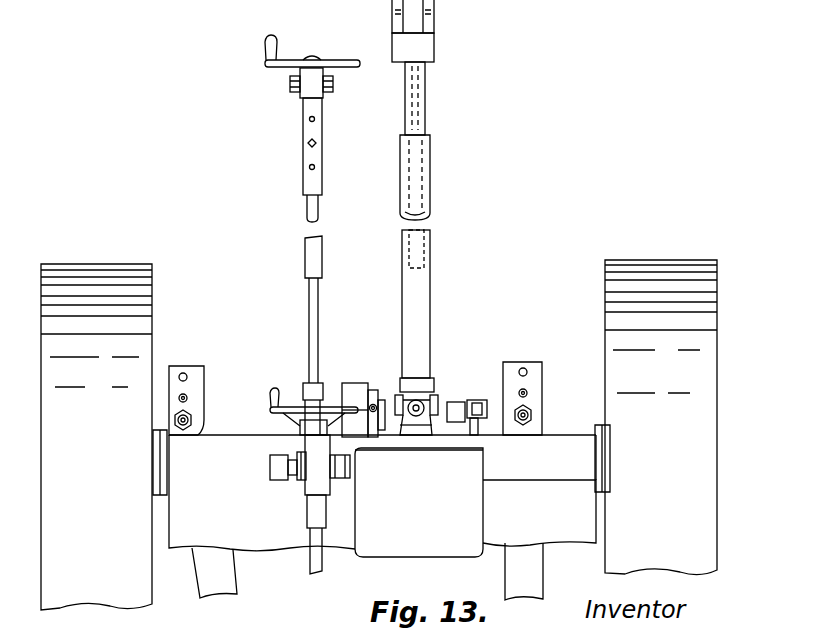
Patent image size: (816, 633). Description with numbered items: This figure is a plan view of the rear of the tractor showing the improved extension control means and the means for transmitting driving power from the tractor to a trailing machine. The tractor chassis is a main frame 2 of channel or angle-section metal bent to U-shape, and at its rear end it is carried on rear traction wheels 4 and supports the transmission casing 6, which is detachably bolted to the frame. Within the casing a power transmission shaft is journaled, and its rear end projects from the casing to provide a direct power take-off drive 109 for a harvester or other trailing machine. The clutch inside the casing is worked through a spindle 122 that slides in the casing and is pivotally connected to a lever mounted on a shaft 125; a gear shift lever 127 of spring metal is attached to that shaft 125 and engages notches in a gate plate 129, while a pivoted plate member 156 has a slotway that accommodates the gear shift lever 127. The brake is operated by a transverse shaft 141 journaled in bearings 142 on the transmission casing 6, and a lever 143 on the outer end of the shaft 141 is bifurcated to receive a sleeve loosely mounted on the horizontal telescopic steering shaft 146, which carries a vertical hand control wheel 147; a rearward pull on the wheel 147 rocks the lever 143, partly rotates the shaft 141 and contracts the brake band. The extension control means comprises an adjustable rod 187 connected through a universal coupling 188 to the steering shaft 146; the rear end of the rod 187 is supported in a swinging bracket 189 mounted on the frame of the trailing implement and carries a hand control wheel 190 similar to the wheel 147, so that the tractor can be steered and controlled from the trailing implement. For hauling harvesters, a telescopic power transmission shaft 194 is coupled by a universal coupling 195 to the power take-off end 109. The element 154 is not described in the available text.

The main frame 2 is at (190, 369).
The rear traction wheels 4 is at (379, 435).
The transmission casing 6 is at (419, 502).
The power take-off drive 109 is at (447, 403).
The spindle 122 is at (475, 437).
The shaft 125 is at (488, 412).
The gear shift lever 127 is at (376, 396).
The gate plate 129 is at (355, 422).
The transverse shaft 141 is at (270, 468).
The bearings 142 is at (345, 472).
The lever 143 is at (283, 481).
The steering shaft 146 is at (311, 540).
The hand control wheel 147 is at (270, 411).
The plate 154 is at (365, 450).
The plate member 156 is at (355, 410).
The adjustable rod 187 is at (306, 245).
The universal coupling 188 is at (313, 392).
The swinging bracket 189 is at (326, 84).
The hand control wheel 190 is at (350, 52).
The power transmission shaft 194 is at (423, 206).
The universal coupling 195 is at (432, 378).